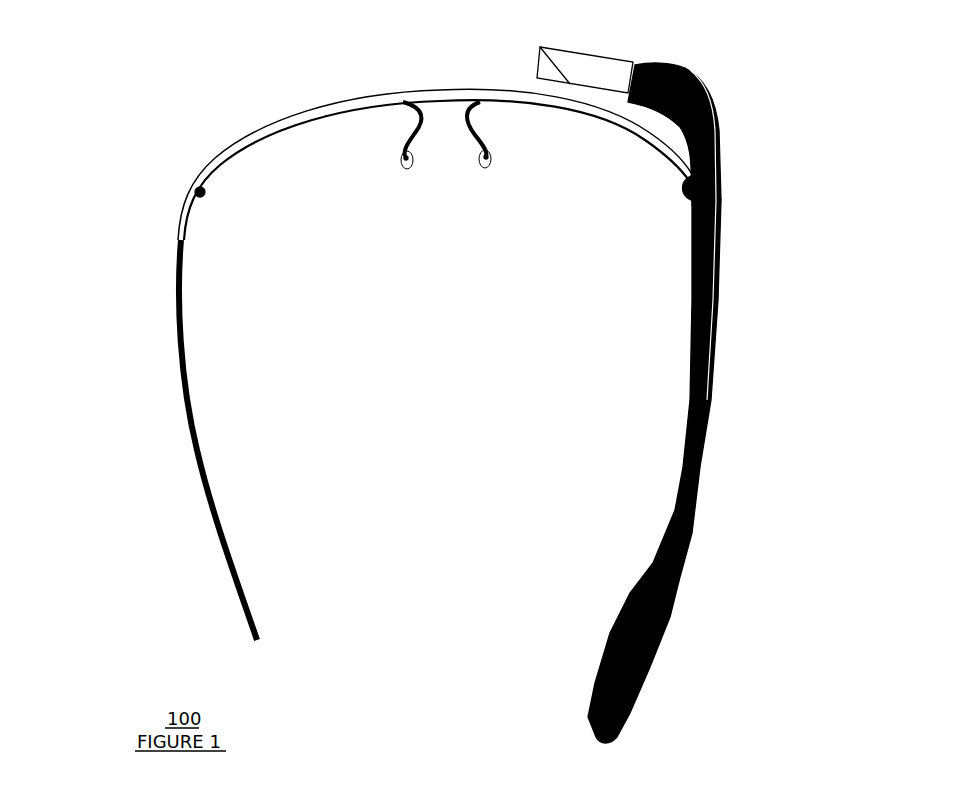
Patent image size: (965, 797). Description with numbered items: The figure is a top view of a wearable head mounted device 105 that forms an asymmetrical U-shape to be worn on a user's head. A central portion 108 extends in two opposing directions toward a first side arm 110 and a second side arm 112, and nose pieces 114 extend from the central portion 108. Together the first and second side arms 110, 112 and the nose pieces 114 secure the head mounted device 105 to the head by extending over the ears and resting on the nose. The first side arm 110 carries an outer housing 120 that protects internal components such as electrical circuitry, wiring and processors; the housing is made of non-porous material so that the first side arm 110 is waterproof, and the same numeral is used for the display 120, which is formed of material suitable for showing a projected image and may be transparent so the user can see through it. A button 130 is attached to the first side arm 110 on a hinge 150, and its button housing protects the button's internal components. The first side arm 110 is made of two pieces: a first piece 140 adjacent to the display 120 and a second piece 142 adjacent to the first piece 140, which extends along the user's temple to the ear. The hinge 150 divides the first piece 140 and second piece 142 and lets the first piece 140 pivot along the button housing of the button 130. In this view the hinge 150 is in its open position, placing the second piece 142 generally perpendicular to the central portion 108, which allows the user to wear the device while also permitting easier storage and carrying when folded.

The head mounted device 105 is at (163, 78).
The central portion 108 is at (405, 90).
The first side arm 110 is at (860, 322).
The second side arm 112 is at (190, 446).
The nose pieces 114 is at (400, 163).
The outer housing 120 is at (540, 62).
The button 130 is at (683, 192).
The first piece 140 is at (712, 92).
The second piece 142 is at (722, 298).
The hinge 150 is at (746, 184).